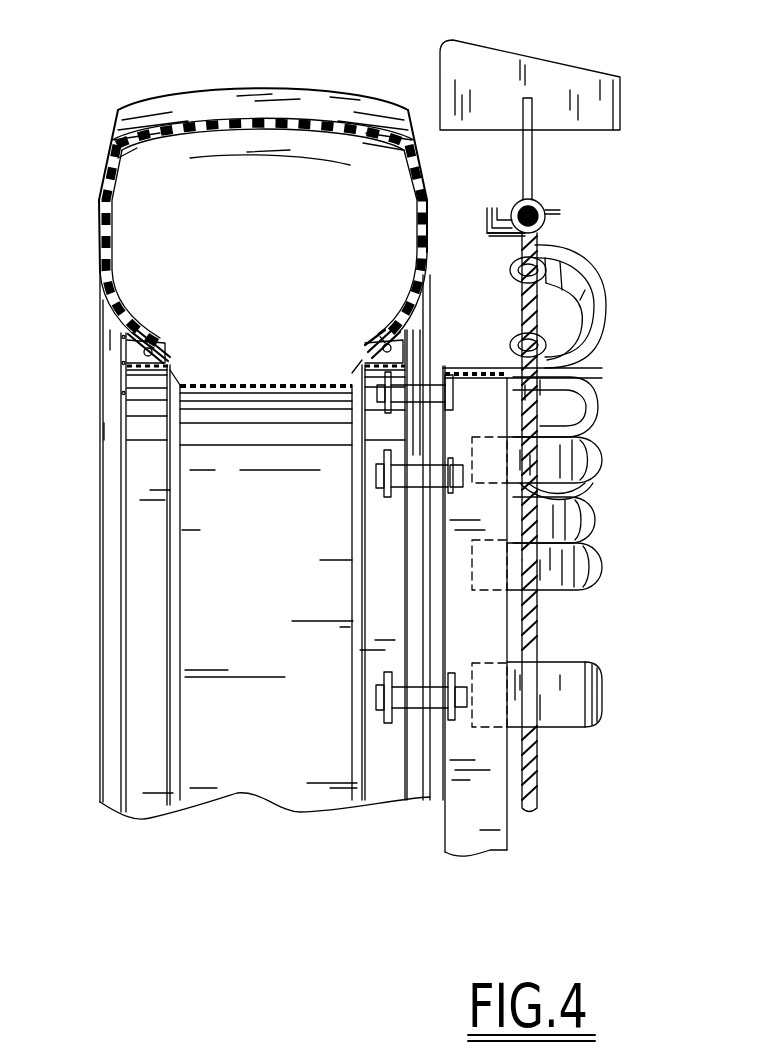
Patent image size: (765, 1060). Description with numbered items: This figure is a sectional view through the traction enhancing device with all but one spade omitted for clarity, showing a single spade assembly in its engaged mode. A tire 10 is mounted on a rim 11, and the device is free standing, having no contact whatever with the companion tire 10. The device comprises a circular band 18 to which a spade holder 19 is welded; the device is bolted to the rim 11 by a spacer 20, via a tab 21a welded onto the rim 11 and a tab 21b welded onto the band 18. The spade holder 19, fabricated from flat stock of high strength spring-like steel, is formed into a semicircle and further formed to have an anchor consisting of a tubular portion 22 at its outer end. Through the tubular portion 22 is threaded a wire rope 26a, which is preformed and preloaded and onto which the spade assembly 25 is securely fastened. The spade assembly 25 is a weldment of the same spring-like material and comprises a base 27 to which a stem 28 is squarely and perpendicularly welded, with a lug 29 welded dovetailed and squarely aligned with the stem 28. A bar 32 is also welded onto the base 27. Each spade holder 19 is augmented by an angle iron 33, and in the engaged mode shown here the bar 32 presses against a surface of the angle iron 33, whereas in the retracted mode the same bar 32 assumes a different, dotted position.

The tire 10 is at (203, 110).
The rim 11 is at (248, 378).
The circular band 18 is at (492, 822).
The spade holder 19 is at (570, 450).
The spacer 20 is at (414, 702).
The tab 21a is at (380, 672).
The tab 21b is at (462, 670).
The tubular portion 22 is at (518, 325).
The spade assembly 25 is at (588, 72).
The wire rope 26a is at (542, 636).
The base 27 is at (548, 210).
The stem 28 is at (535, 170).
The lug 29 is at (603, 107).
The bar 32 is at (497, 207).
The angle iron 33 is at (495, 236).